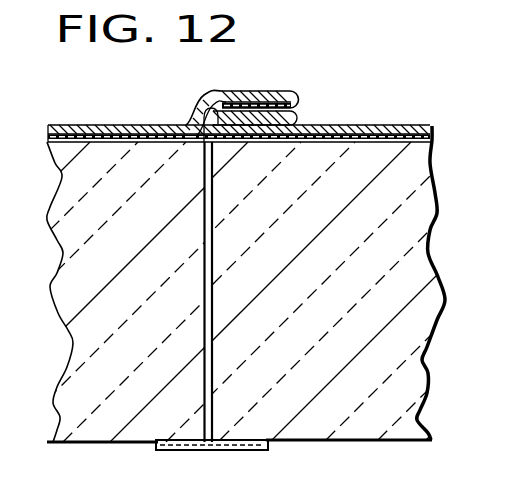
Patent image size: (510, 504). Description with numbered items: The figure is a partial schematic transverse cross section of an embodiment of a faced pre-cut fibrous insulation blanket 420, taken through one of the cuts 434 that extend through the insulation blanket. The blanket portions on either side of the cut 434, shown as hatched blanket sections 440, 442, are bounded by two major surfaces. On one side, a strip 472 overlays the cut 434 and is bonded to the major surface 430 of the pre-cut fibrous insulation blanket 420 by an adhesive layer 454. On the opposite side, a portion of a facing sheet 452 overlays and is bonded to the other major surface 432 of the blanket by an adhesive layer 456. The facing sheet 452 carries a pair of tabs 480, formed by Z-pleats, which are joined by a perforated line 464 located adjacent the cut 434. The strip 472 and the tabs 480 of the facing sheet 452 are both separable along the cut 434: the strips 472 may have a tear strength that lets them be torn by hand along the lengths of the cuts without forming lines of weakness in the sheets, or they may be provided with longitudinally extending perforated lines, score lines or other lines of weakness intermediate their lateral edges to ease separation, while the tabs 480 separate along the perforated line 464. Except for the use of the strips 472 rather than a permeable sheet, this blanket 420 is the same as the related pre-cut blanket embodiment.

The faced pre-cut fibrous insulation blanket 420 is at (385, 92).
The major surface 430 is at (365, 441).
The major surface 432 is at (347, 153).
The cut 434 is at (210, 410).
The core of first panel 440 is at (144, 298).
The core of second panel 442 is at (353, 297).
The facing sheet 452 is at (110, 120).
The adhesive layer 454 is at (170, 440).
The adhesive layer 456 is at (150, 147).
The perforated line 464 is at (292, 112).
The strip 472 is at (236, 455).
The tabs 480 is at (264, 82).